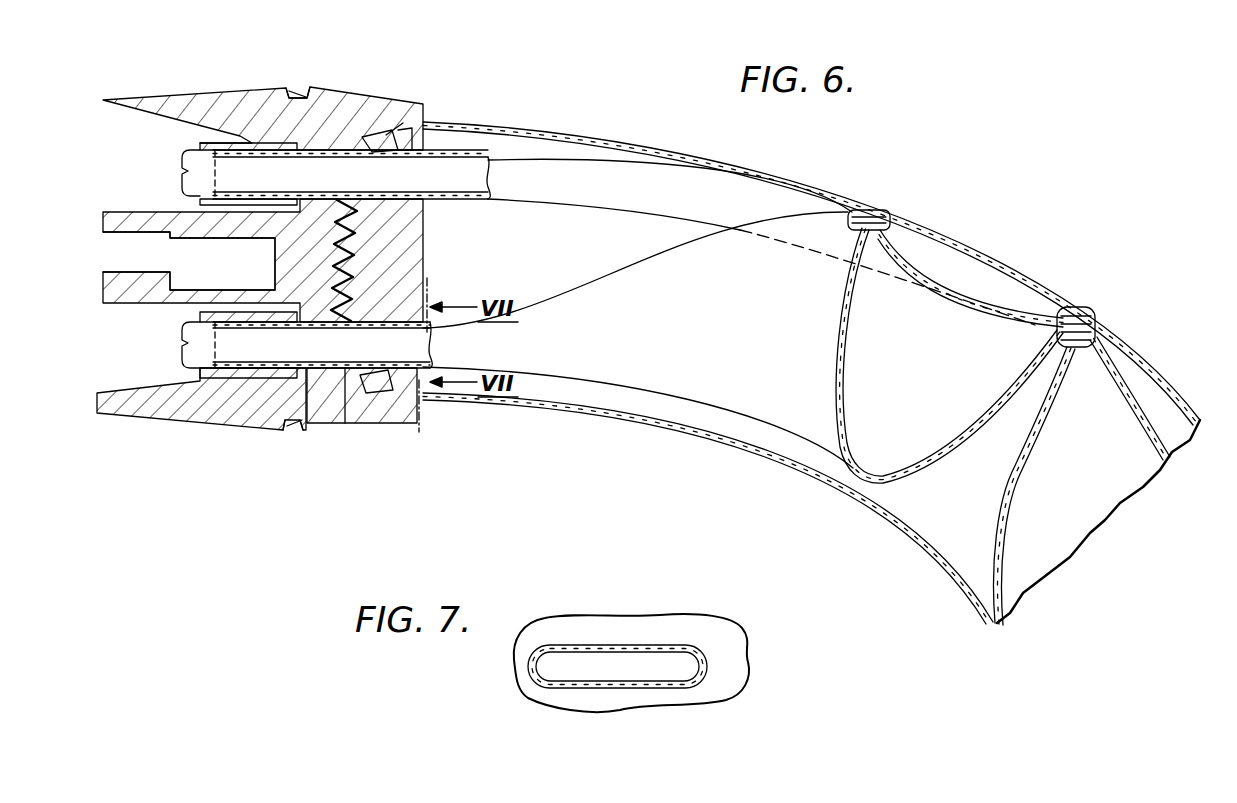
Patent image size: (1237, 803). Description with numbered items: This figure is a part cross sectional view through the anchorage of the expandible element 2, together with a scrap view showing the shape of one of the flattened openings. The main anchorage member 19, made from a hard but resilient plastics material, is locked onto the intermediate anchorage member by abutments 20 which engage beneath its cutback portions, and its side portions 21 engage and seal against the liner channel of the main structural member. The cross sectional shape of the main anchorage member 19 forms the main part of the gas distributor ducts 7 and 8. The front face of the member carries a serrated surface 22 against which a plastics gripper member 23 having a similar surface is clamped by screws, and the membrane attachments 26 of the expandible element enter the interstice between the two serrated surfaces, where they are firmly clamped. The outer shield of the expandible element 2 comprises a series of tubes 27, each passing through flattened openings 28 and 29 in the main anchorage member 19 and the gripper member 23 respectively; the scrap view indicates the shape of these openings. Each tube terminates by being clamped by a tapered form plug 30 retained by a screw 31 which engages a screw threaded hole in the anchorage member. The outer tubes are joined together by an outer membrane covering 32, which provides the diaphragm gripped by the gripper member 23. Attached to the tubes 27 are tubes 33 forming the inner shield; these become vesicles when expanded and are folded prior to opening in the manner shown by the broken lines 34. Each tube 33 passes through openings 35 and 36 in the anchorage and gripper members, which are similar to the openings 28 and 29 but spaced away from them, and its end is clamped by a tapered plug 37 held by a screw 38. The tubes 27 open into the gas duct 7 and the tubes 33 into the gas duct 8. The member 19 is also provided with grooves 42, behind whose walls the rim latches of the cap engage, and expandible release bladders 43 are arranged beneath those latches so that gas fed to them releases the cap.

In FIG. 6, the expandible element 2 is at (880, 210).
In FIG. 6, the gas distributor duct 7 is at (118, 183).
In FIG. 6, the gas distributor duct 8 is at (118, 358).
In FIG. 6, the main anchorage member 19 is at (370, 405).
In FIG. 6, the abutments 20 is at (133, 285).
In FIG. 6, the side portions 21 is at (172, 105).
In FIG. 6, the serrated surface 22 is at (350, 313).
In FIG. 6, the gripper member 23 is at (428, 272).
In FIG. 6, the membrane attachments 26 is at (522, 126).
In FIG. 6, the tubes 27 is at (560, 193).
In FIG. 6, the flattened opening 28 is at (363, 132).
In FIG. 7, the flattened opening 28 is at (578, 660).
In FIG. 6, the flattened opening 29 is at (408, 132).
In FIG. 6, the tapered form plug 30 is at (230, 167).
In FIG. 6, the screw 31 is at (188, 181).
In FIG. 6, the outer membrane covering 32 is at (596, 141).
In FIG. 6, the tubes 33 is at (940, 398).
In FIG. 6, the broken lines 34 is at (968, 315).
In FIG. 6, the opening 35 is at (360, 408).
In FIG. 6, the opening 36 is at (418, 420).
In FIG. 6, the tapered plug 37 is at (245, 313).
In FIG. 6, the screw 38 is at (186, 353).
In FIG. 6, the grooves 42 is at (312, 96).
In FIG. 6, the expandible release bladders 43 is at (296, 93).